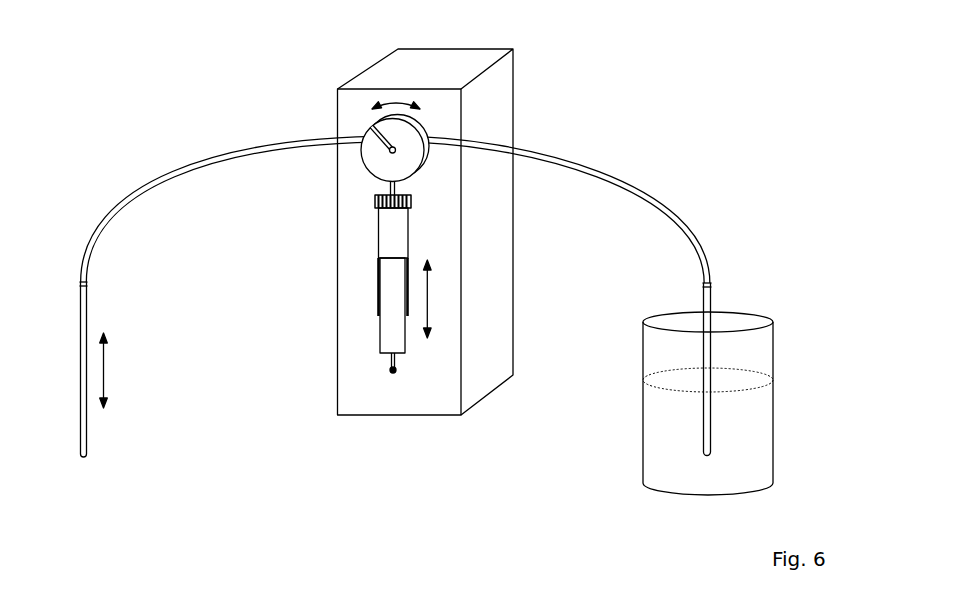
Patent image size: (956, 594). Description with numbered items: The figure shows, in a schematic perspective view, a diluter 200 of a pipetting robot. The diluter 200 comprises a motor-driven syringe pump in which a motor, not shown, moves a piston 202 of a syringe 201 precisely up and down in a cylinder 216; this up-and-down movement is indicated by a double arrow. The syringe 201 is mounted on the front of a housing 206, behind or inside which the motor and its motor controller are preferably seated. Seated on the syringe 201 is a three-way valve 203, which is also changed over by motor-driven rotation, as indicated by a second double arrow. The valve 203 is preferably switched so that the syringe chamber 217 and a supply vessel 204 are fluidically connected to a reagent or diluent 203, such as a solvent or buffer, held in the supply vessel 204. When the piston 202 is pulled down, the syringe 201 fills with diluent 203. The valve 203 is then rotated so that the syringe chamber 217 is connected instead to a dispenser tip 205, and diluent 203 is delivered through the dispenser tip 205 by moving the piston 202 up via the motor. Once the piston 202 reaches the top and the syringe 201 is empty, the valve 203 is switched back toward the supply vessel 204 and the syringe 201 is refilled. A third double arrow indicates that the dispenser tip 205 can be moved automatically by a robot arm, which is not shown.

The diluter 200 is at (618, 71).
The syringe 201 is at (408, 284).
The piston 202 is at (393, 329).
The three-way valve 203 is at (375, 157).
The supply vessel 204 is at (643, 350).
The dispenser tip 205 is at (84, 294).
The housing 206 is at (360, 80).
The cylinder 216 is at (408, 243).
The syringe chamber 217 is at (397, 221).